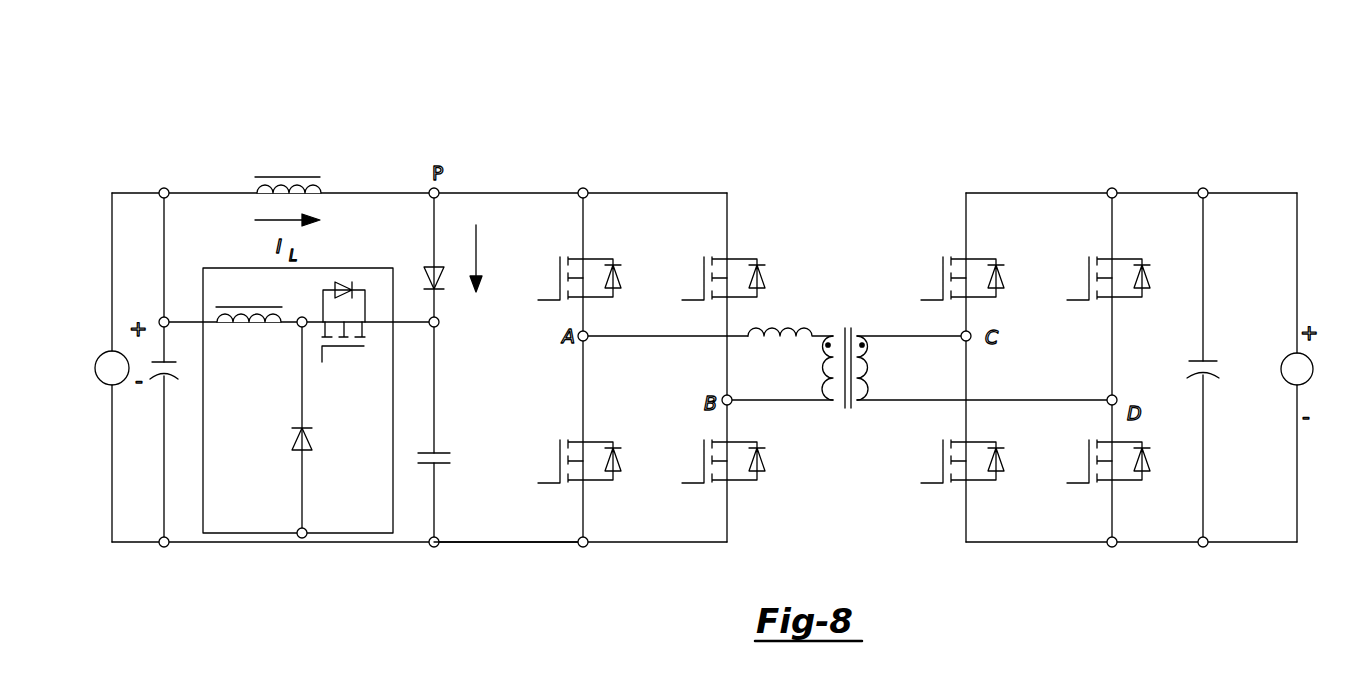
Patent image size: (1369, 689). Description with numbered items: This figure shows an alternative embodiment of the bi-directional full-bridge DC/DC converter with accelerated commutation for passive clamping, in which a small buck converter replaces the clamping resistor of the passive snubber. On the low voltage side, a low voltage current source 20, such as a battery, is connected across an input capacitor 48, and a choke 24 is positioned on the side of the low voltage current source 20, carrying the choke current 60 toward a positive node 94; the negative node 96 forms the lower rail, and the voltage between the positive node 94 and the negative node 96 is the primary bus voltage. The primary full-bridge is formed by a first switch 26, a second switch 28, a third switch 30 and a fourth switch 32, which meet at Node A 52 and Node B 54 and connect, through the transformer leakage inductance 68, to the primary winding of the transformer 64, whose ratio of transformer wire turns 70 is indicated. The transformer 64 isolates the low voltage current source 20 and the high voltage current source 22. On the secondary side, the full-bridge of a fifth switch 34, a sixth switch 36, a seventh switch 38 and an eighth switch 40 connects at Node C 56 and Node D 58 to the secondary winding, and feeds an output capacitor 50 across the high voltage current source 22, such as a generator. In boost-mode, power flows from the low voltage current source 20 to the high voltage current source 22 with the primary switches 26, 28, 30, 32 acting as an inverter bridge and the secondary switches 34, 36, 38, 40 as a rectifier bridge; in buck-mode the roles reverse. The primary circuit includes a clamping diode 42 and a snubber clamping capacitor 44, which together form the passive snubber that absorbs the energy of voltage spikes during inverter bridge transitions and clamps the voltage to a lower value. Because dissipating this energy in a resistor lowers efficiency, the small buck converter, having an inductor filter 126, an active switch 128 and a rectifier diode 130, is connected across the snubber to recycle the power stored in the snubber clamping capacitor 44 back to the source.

The low voltage current source Vb 20 is at (69, 337).
The high voltage current source Vo 22 is at (1347, 322).
The choke Lf 24 is at (233, 202).
The switch S1 26 is at (541, 258).
The switch S2 28 is at (695, 452).
The switch S3 30 is at (553, 452).
The switch S4 32 is at (692, 255).
The switch S5 34 is at (932, 264).
The switch S6 36 is at (1068, 480).
The switch S7 38 is at (918, 480).
The switch S8 40 is at (1082, 262).
The clamping diode Dc 42 is at (405, 232).
The snubber (clamping) capacitor Cc 44 is at (408, 450).
The input capacitor Ci 48 is at (172, 412).
The output capacitor Co 50 is at (1250, 392).
The Node A 52 is at (556, 336).
The Node B 54 is at (700, 403).
The Node C 56 is at (1000, 341).
The Node D 58 is at (1145, 412).
The choke current IL 60 is at (276, 240).
The transformer T 64 is at (856, 252).
The transformer leakage inductance Llk 68 is at (791, 262).
The ratio of transformer wire turns 1:n 70 is at (840, 465).
The positive node P 94 is at (430, 142).
The negative node N 96 is at (445, 592).
The inductor filter Lcb 126 is at (235, 380).
The active switch Scb 128 is at (338, 458).
The rectifier diode Dcb 130 is at (355, 362).